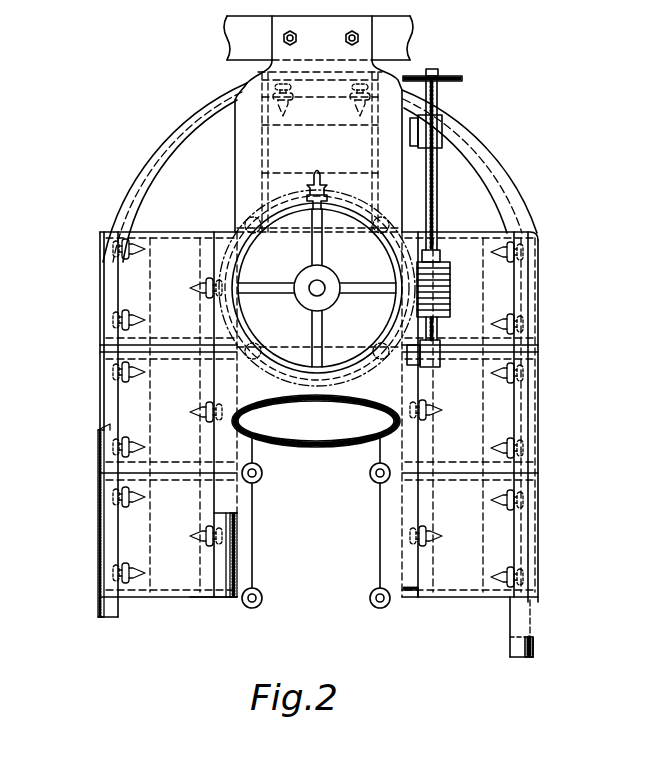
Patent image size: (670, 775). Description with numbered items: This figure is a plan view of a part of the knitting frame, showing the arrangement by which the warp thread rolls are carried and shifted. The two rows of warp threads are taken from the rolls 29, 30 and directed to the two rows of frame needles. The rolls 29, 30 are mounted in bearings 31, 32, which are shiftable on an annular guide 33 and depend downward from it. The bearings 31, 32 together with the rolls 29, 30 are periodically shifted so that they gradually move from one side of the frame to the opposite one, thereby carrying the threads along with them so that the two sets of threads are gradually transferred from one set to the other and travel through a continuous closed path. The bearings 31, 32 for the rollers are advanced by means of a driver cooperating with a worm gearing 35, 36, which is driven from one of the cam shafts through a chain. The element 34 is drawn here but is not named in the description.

The roll 29 is at (170, 512).
The roll 30 is at (475, 541).
The bearing 31 is at (206, 590).
The bearing 32 is at (413, 598).
The annular guide 33 is at (173, 142).
The oval ring 34 is at (283, 347).
The worm gearing 35 is at (450, 281).
The worm gearing 36 is at (268, 286).